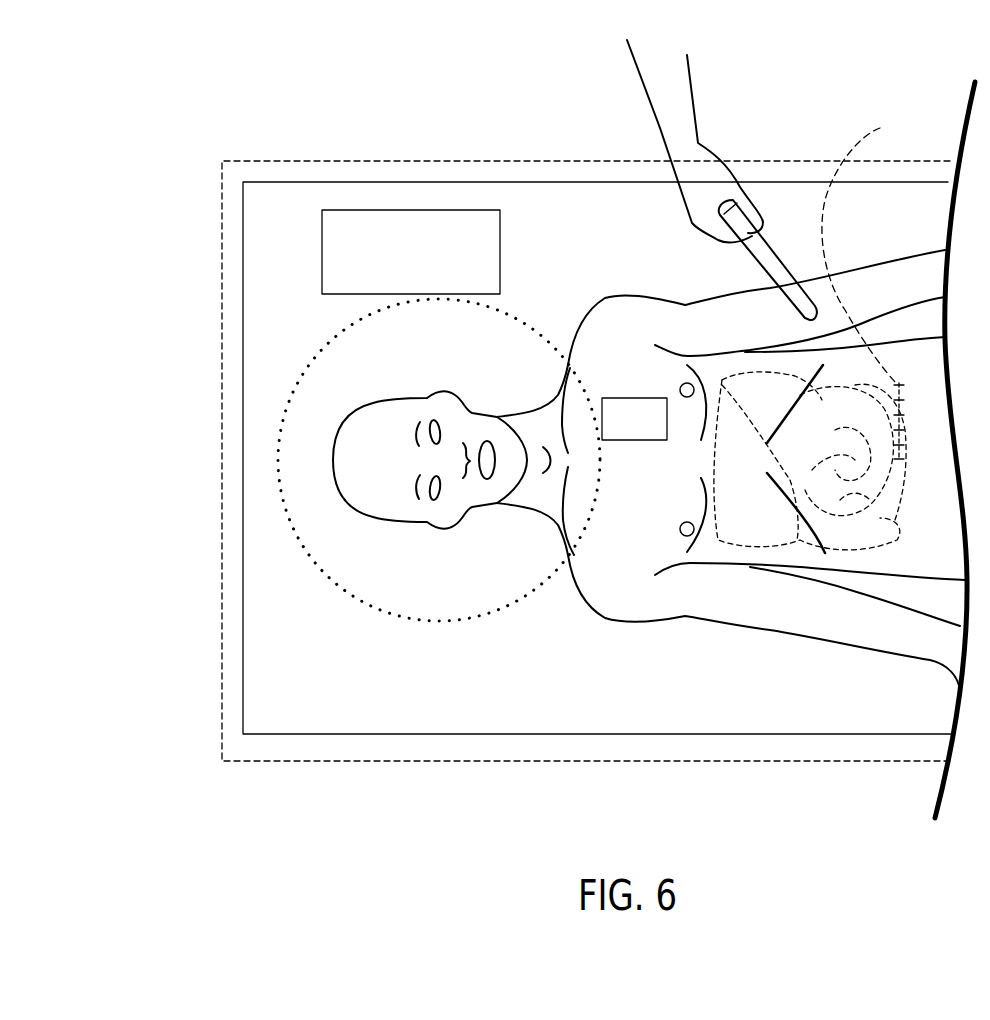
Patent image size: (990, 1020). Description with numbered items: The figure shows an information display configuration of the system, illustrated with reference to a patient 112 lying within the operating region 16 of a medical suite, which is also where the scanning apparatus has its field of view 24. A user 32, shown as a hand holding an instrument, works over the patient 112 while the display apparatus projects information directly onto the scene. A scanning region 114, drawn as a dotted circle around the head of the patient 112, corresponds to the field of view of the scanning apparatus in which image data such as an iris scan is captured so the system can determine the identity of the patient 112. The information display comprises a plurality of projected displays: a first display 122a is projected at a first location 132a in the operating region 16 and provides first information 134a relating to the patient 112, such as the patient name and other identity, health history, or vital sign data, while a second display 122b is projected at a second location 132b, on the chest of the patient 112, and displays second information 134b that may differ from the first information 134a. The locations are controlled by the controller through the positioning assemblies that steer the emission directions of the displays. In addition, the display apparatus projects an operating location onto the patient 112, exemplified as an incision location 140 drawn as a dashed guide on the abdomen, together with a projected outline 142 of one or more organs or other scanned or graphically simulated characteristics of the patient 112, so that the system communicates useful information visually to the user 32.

The operating region 16 is at (238, 620).
The field of view 24 is at (238, 762).
The user 32 is at (662, 92).
The patient 112 is at (617, 622).
The scanning region 114 is at (293, 404).
The first display 122a is at (265, 252).
The first location 132a is at (265, 252).
The first information 134a is at (322, 254).
The second display 122b is at (504, 282).
The second location 132b is at (504, 282).
The second information 134b is at (638, 398).
The incision location 140 is at (880, 128).
The projected outline 142 is at (768, 555).